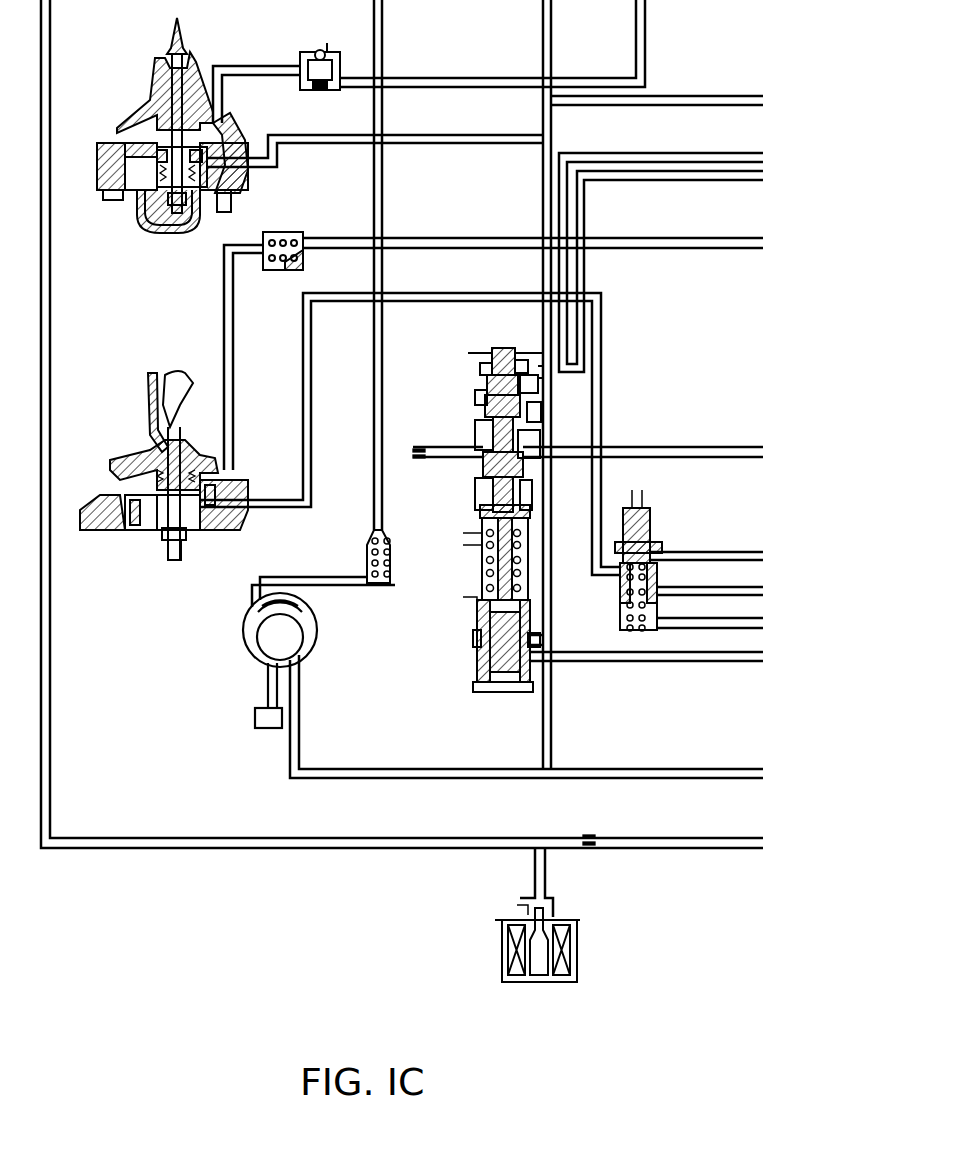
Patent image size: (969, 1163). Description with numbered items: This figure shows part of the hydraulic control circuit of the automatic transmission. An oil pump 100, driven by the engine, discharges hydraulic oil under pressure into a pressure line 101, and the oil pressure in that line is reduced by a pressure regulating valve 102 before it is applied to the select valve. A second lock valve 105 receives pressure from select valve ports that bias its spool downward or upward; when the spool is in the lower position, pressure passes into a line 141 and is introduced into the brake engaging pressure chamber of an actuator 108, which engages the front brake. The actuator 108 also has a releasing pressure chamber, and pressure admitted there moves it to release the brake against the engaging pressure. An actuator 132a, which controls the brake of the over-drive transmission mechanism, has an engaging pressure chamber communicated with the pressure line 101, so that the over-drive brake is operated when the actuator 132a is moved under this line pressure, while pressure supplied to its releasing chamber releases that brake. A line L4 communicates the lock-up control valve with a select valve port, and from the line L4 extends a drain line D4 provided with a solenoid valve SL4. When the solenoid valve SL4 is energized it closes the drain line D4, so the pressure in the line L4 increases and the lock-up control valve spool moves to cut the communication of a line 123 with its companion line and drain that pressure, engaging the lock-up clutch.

The oil pump 100 is at (272, 640).
The pressure line 101 is at (667, 96).
The pressure regulating valve 102 is at (462, 610).
The second lock valve 105 is at (655, 503).
The actuator 108 is at (130, 532).
The line 123 is at (383, 46).
The actuator 132a is at (143, 208).
The line 141 is at (602, 425).
The line L4 is at (172, 848).
The drain line D4 is at (545, 869).
The solenoid valve SL4 is at (543, 955).